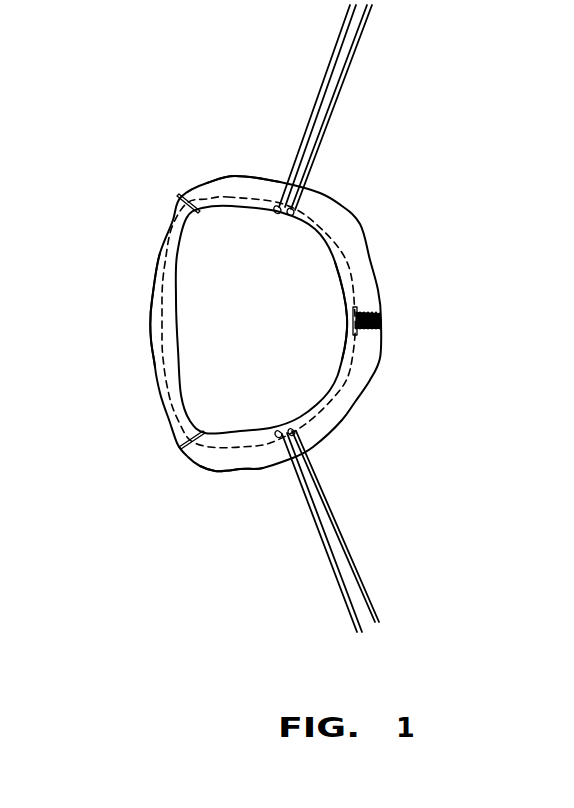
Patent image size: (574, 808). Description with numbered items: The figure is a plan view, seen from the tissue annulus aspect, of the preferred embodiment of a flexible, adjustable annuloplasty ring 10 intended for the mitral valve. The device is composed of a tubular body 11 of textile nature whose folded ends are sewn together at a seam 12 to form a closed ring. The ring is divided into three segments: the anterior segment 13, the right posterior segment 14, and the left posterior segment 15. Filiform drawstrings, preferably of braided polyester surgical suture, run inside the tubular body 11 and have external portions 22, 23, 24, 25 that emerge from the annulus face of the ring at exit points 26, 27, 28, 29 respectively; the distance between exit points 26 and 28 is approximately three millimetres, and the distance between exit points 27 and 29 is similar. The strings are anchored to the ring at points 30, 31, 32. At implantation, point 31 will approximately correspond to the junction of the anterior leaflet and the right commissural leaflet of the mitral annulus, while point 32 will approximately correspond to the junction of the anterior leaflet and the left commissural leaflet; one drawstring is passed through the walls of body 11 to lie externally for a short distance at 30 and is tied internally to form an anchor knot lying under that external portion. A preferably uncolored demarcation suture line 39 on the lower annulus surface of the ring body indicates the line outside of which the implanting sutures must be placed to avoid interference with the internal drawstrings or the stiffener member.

The annuloplasty ring 10 is at (347, 420).
The tubular body 11 is at (343, 410).
The seam 12 is at (357, 304).
The anterior segment 13 is at (157, 363).
The right posterior segment 14 is at (216, 455).
The left posterior segment 15 is at (223, 190).
The external portion 22 is at (318, 535).
The external portion 23 is at (322, 86).
The external portion 24 is at (353, 548).
The external portion 25 is at (340, 84).
The exit point 26 is at (283, 438).
The exit point 27 is at (275, 207).
The exit point 28 is at (295, 432).
The exit point 29 is at (294, 211).
The anchor point 30 is at (382, 308).
The anchor point 31 is at (178, 452).
The anchor point 32 is at (180, 197).
The demarcation suture line 39 is at (163, 262).